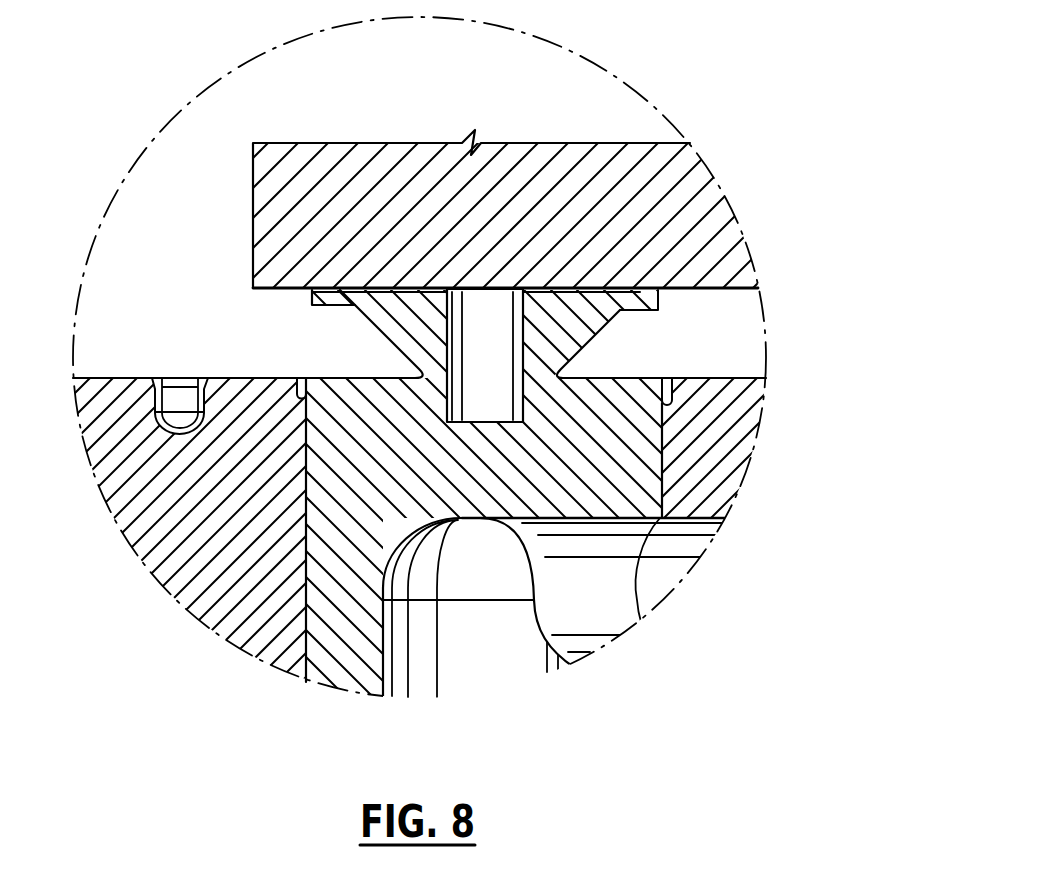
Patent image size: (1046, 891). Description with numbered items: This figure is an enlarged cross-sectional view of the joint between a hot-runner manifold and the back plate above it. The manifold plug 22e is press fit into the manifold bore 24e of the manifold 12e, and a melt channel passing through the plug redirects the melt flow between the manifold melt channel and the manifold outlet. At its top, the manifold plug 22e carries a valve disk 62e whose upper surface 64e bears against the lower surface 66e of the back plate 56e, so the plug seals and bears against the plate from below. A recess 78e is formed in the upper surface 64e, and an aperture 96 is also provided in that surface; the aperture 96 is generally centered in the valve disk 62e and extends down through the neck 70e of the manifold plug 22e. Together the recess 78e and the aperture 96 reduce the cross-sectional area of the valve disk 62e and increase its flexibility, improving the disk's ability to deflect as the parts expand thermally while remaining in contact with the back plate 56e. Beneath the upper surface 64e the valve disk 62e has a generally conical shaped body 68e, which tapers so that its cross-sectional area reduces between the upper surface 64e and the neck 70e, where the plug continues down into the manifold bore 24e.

The manifold 12e is at (722, 453).
The manifold plug 22e is at (326, 483).
The manifold bore 24e is at (305, 562).
The back plate 56e is at (705, 218).
The valve disk 62e is at (588, 328).
The upper surface 64e is at (335, 290).
The lower surface 66e is at (735, 290).
The conical shaped body 68e is at (410, 320).
The neck 70e is at (548, 372).
The recess 78e is at (362, 288).
The aperture 96 is at (497, 313).